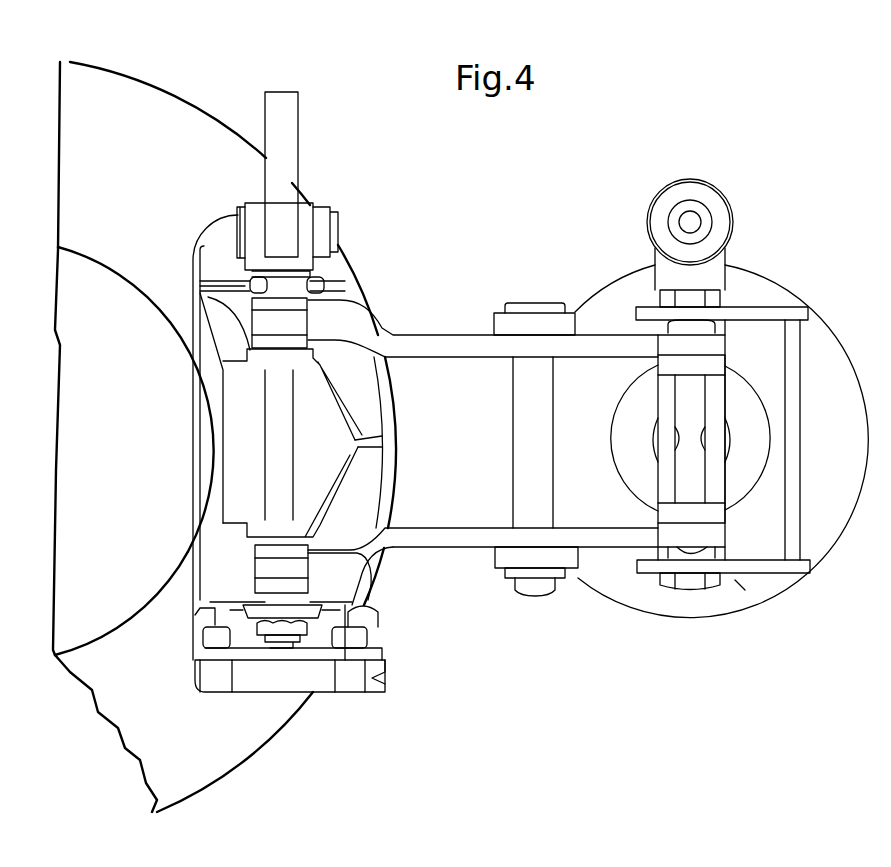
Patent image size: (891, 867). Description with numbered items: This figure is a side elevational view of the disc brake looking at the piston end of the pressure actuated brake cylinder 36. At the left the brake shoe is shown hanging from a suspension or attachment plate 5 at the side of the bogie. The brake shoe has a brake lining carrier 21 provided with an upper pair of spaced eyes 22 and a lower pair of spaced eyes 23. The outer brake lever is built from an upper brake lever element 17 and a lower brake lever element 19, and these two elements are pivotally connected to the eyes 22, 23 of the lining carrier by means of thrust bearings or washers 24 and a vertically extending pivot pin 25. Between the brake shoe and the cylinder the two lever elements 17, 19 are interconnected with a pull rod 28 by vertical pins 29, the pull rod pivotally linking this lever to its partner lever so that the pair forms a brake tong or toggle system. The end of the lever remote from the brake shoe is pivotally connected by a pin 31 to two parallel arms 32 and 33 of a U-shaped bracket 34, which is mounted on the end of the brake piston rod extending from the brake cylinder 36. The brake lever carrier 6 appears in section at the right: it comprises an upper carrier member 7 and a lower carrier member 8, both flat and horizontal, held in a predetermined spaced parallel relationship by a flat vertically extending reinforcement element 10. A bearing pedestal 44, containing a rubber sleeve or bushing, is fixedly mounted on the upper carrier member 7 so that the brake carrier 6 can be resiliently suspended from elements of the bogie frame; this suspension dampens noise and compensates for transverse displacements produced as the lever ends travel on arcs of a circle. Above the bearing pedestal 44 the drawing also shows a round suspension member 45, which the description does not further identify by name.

The suspension or attachment plate 5 is at (301, 198).
The brake lever carrier 6 is at (730, 577).
The upper carrier member 7 is at (780, 313).
The lower carrier member 8 is at (800, 568).
The reinforcement element 10 is at (795, 461).
The upper brake lever element 17 is at (443, 342).
The lower brake lever element 19 is at (453, 540).
The brake lining carrier 21 is at (248, 445).
The upper pair of spaced eyes 22 is at (267, 286).
The lower pair of spaced eyes 23 is at (240, 572).
The thrust bearings or washers 24 is at (300, 343).
The pivot pin 25 is at (270, 405).
The pull rod 28 is at (568, 553).
The vertical pin 29 is at (530, 423).
The pin 31 is at (688, 478).
The arm of U-shaped bracket 32 is at (715, 517).
The arm of U-shaped bracket 33 is at (715, 367).
The U-shaped bracket 34 is at (712, 407).
The brake cylinder 36 is at (820, 330).
The bearing pedestal 44 is at (715, 278).
The roller 45 is at (690, 207).